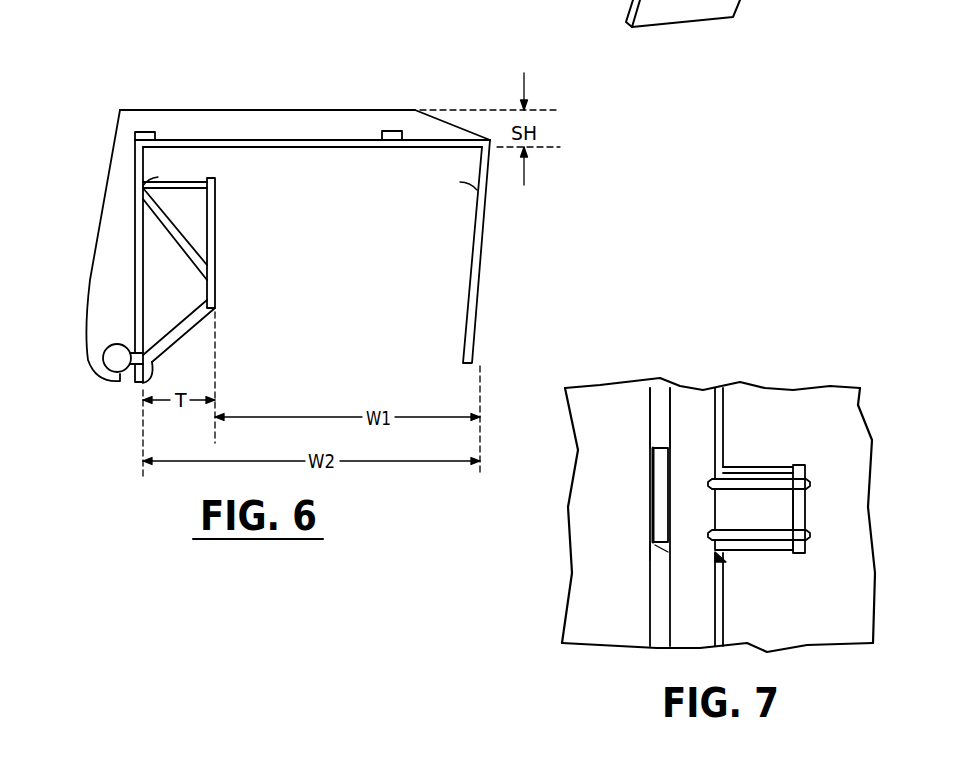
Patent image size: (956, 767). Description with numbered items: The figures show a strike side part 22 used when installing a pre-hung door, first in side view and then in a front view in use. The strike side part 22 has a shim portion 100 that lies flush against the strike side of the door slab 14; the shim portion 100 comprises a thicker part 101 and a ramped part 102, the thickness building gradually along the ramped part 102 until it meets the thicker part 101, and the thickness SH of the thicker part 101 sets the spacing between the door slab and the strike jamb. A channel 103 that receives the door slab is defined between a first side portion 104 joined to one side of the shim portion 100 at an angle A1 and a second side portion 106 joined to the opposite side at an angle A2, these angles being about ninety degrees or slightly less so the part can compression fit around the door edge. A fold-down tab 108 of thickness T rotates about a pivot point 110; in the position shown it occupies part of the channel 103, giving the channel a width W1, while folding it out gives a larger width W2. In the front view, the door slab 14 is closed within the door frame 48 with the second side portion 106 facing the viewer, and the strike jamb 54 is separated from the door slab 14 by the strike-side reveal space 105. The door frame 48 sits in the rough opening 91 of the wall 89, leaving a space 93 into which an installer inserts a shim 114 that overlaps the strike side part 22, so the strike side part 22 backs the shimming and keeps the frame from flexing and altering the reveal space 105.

In FIG. 6, the strike side part 22 is at (327, 48).
In FIG. 7, the strike side part 22 is at (748, 465).
In FIG. 6, the shim portion 100 is at (205, 118).
In FIG. 6, the thicker part 101 is at (297, 118).
In FIG. 6, the ramped part 102 is at (430, 110).
In FIG. 6, the channel 103 is at (347, 345).
In FIG. 6, the first side portion 104 is at (475, 322).
In FIG. 6, the second side portion 106 is at (87, 287).
In FIG. 7, the second side portion 106 is at (753, 518).
In FIG. 6, the fold-down tab 108 is at (215, 202).
In FIG. 6, the pivot point 110 is at (113, 361).
In FIG. 6, the angle A1 is at (437, 148).
In FIG. 6, the angle A2 is at (178, 149).
In FIG. 7, the strike jamb 54 is at (683, 397).
In FIG. 7, the door frame 48 is at (693, 413).
In FIG. 7, the strike-side reveal space 105 is at (718, 400).
In FIG. 7, the space 93 is at (658, 430).
In FIG. 7, the shim 114 is at (658, 502).
In FIG. 7, the rough opening 91 is at (650, 557).
In FIG. 7, the wall 89 is at (615, 631).
In FIG. 7, the door slab 14 is at (839, 631).